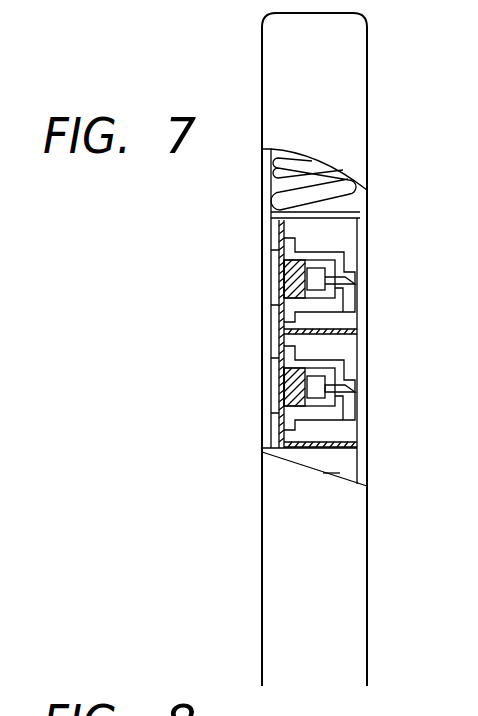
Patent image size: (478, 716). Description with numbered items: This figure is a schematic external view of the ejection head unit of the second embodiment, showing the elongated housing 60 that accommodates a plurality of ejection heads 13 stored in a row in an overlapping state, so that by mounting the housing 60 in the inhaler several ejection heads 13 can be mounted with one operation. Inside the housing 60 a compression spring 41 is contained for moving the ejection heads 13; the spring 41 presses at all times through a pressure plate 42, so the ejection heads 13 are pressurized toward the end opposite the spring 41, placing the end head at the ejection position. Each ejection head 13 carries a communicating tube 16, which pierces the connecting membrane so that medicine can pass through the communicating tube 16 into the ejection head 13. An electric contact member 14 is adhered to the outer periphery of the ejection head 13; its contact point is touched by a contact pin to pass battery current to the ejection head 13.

The housing 60 is at (358, 53).
The compression spring 41 is at (348, 186).
The pressure plate 42 is at (325, 218).
The ejection head 13 is at (338, 252).
The communicating tube 16 is at (354, 389).
The electric contact member 14 is at (338, 452).